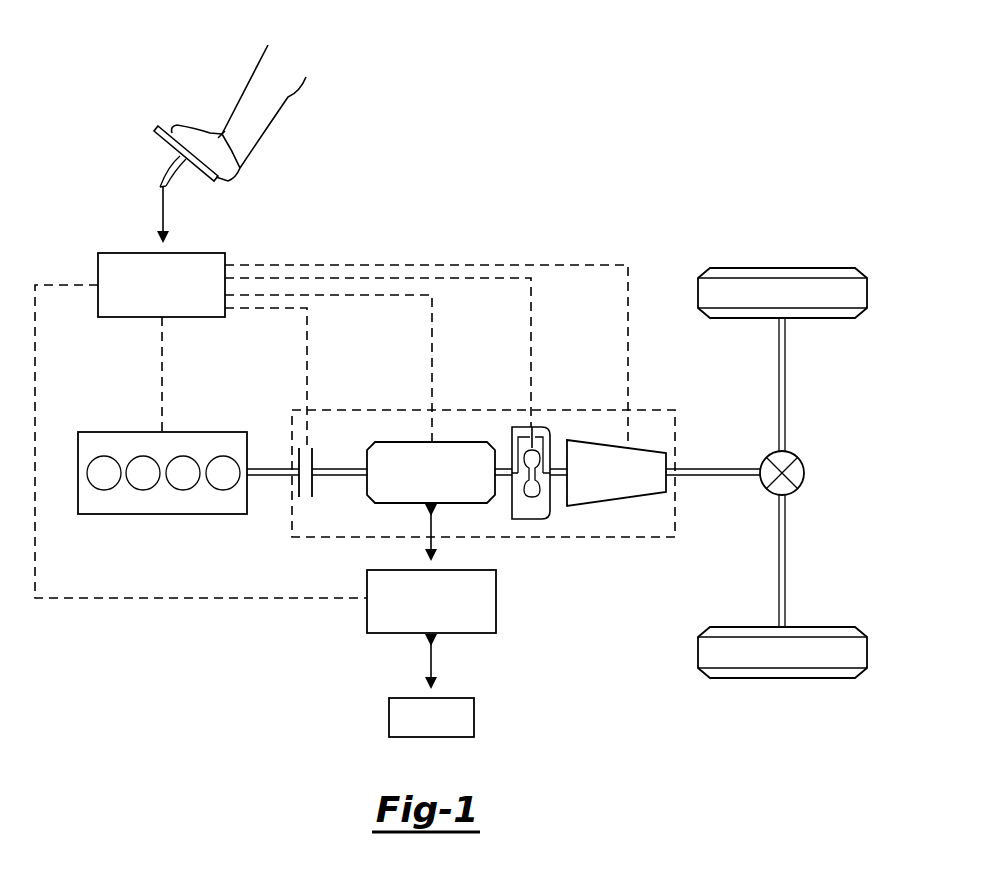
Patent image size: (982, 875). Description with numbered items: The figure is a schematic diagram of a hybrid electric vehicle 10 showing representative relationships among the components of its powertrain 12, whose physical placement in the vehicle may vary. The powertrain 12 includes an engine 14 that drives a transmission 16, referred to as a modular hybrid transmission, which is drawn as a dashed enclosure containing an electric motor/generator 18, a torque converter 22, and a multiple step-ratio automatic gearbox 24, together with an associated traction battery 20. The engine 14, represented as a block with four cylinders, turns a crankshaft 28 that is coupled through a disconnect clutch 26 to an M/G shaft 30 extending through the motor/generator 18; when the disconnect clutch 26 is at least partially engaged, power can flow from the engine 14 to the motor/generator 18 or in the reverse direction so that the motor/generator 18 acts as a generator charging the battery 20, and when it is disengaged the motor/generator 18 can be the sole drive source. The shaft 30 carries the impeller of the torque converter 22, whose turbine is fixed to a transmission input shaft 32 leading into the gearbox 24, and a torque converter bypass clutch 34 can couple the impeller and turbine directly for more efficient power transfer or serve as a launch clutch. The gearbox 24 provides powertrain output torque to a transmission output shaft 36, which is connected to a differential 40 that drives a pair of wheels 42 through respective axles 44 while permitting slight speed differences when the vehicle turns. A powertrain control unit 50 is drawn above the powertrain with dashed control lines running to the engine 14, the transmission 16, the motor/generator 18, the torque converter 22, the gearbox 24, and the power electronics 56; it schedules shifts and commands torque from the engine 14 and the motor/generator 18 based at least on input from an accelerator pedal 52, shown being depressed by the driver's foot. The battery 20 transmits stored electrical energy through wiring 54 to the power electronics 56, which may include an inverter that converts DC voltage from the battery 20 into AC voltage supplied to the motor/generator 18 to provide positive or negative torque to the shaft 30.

The hybrid electric vehicle 10 is at (683, 200).
The powertrain 12 is at (241, 641).
The engine 14 is at (97, 432).
The transmission 16 is at (470, 410).
The electric motor/generator 18 is at (410, 442).
The traction battery 20 is at (389, 718).
The torque converter 22 is at (527, 519).
The gearbox 24 is at (610, 506).
The disconnect clutch 26 is at (310, 497).
The crankshaft 28 is at (276, 469).
The M/G shaft 30 is at (345, 469).
The transmission input shaft 32 is at (557, 469).
The torque converter bypass clutch 34 is at (532, 427).
The transmission output shaft 36 is at (727, 469).
The differential 40 is at (804, 474).
The wheels 42 is at (783, 268).
The axles 44 is at (786, 386).
The powertrain control unit 50 is at (104, 253).
The accelerator pedal 52 is at (158, 128).
The wiring 54 is at (430, 665).
The power electronics 56 is at (496, 603).